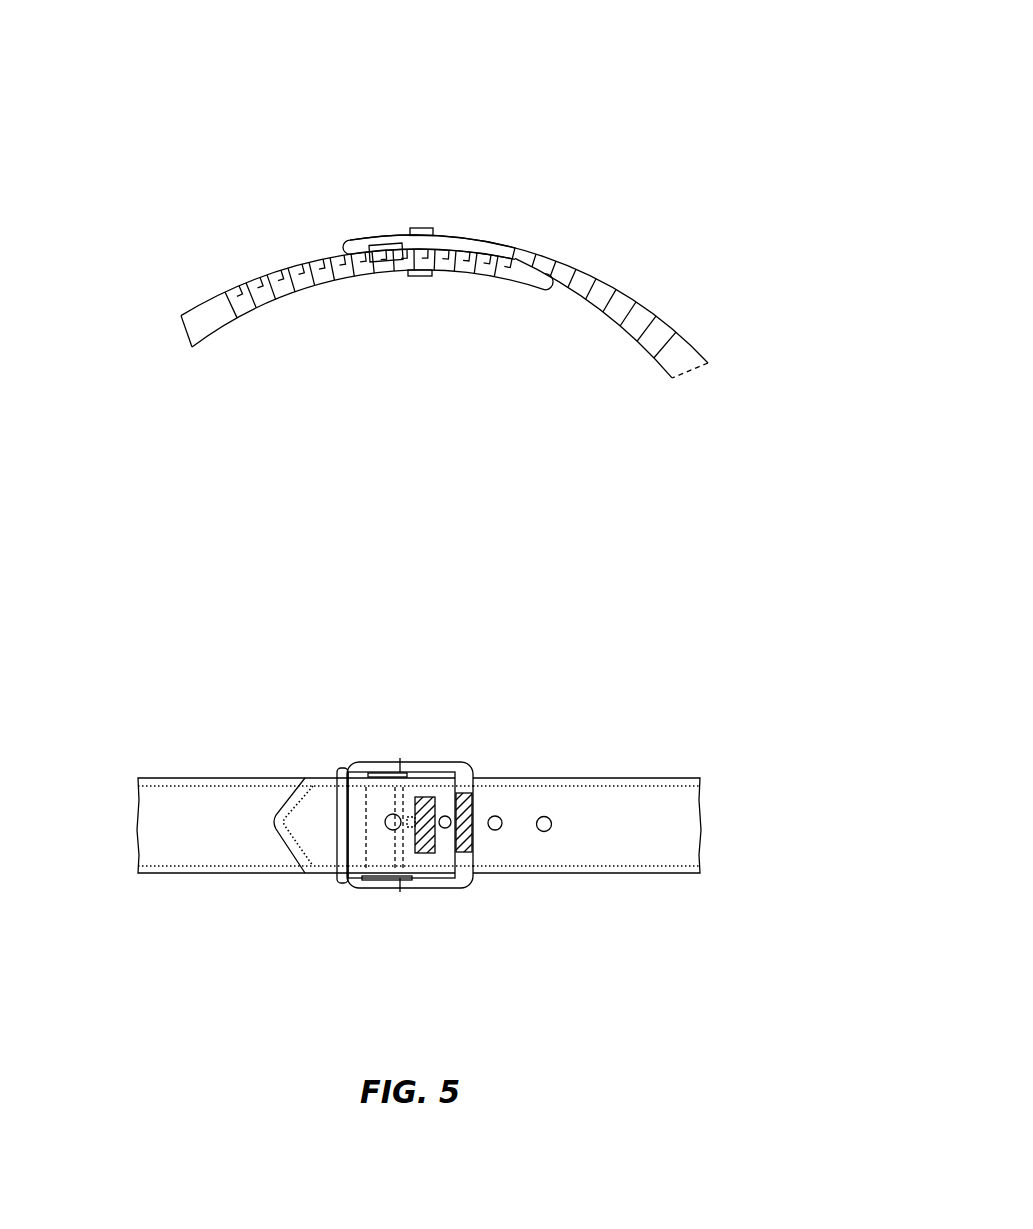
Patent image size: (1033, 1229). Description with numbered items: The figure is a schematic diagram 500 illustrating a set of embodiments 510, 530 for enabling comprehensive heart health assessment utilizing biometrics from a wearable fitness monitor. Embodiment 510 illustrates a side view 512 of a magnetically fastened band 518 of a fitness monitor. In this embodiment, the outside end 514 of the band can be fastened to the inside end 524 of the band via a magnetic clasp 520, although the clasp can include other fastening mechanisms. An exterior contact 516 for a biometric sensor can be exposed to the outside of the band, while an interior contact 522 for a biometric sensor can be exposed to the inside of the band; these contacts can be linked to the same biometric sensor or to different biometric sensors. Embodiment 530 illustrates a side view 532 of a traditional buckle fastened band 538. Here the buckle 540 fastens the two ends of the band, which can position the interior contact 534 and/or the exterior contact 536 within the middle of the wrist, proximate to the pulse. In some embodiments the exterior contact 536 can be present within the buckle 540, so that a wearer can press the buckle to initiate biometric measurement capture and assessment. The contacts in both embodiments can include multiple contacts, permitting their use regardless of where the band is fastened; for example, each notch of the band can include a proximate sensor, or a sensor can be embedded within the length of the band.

The drawing sheet 500 is at (870, 36).
The embodiment 510 is at (215, 102).
The side view 512 is at (247, 161).
The outside end 514 is at (342, 244).
The exterior contact 516 is at (420, 228).
The band 518 is at (185, 329).
The magnetic clasp 520 is at (381, 260).
The interior contact 522 is at (423, 276).
The inside end 524 is at (544, 293).
The embodiment 530 is at (260, 622).
The side view 532 is at (222, 714).
The interior contact 534 is at (430, 796).
The exterior contact 536 is at (462, 792).
The band 538 is at (637, 778).
The buckle 540 is at (462, 888).